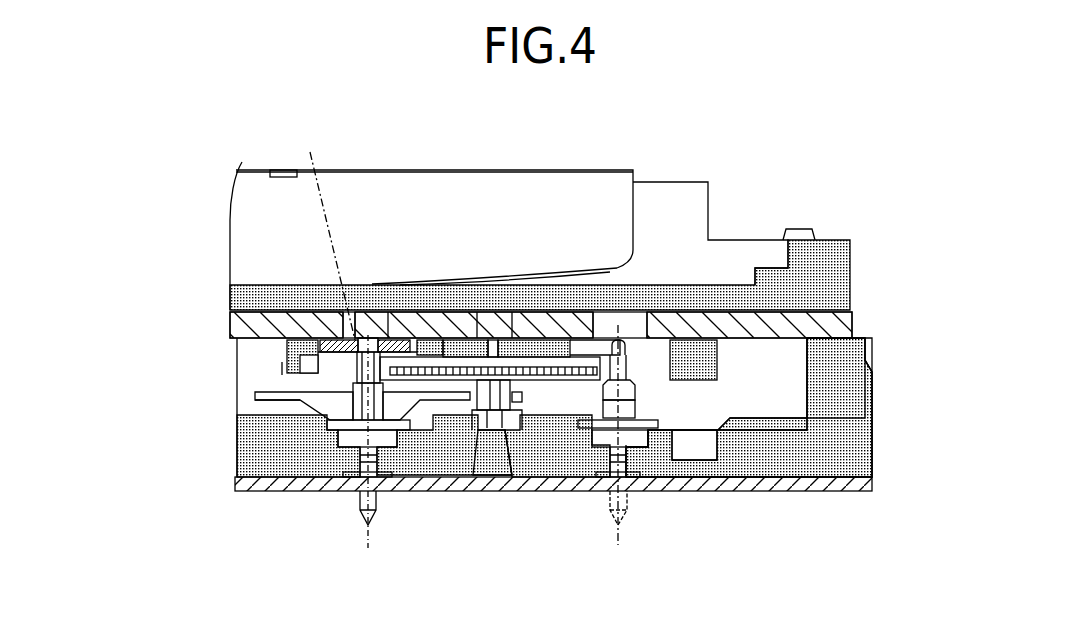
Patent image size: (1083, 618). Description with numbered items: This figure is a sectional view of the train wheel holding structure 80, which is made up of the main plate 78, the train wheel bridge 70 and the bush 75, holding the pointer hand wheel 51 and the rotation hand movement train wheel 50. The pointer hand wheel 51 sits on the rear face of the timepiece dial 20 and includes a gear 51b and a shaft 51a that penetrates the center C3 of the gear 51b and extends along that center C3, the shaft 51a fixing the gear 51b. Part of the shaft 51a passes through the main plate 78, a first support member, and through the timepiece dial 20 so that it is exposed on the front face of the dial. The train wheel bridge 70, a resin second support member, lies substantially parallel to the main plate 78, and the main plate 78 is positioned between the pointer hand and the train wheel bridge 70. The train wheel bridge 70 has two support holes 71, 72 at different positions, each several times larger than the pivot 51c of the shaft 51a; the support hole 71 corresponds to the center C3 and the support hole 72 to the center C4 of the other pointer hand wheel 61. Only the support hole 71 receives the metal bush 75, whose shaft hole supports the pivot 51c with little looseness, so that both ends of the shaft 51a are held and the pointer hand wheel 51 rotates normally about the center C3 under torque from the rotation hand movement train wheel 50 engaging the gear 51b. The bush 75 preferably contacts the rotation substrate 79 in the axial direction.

The timepiece dial 20 is at (872, 483).
The rotation hand movement train wheel 50 is at (447, 362).
The pointer hand wheel 51 is at (291, 323).
The shaft 51a is at (357, 365).
The gear 51b is at (285, 398).
The pivot 51c is at (377, 338).
The pointer hand wheel 61 is at (641, 402).
The train wheel bridge 70 is at (290, 357).
The support hole 71 is at (383, 340).
The support hole 72 is at (580, 350).
The bush 75 is at (333, 345).
The main plate 78 is at (833, 443).
The rotation substrate 79 is at (828, 330).
The train wheel holding structure 80 is at (282, 368).
The center C3 is at (325, 234).
The center C4 is at (620, 527).